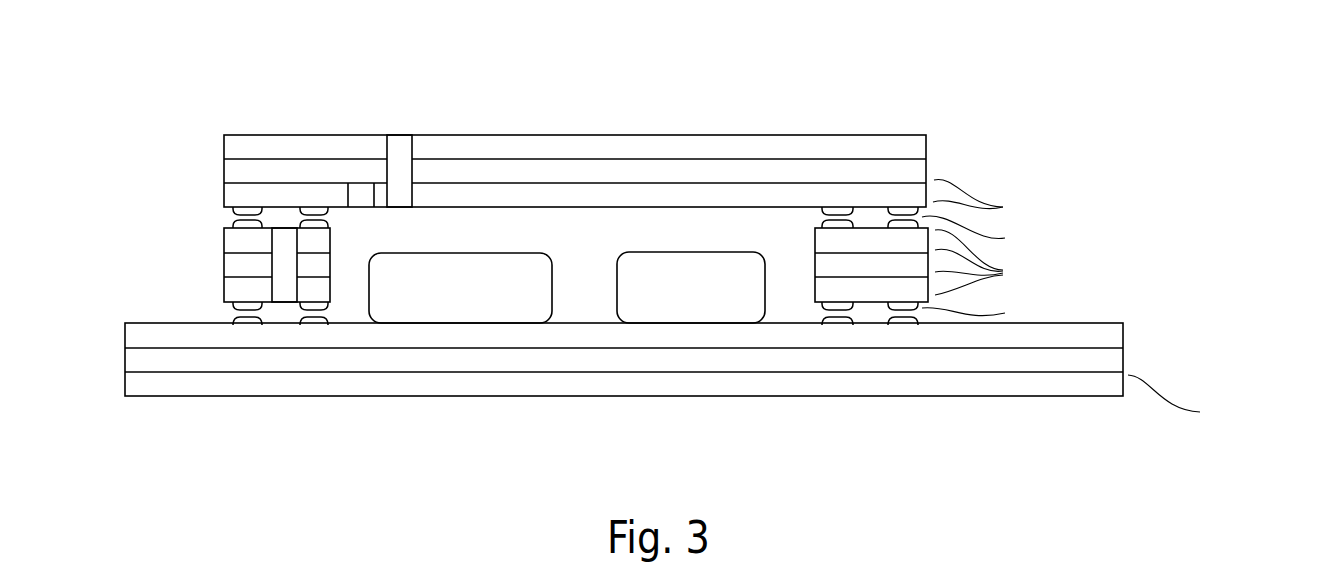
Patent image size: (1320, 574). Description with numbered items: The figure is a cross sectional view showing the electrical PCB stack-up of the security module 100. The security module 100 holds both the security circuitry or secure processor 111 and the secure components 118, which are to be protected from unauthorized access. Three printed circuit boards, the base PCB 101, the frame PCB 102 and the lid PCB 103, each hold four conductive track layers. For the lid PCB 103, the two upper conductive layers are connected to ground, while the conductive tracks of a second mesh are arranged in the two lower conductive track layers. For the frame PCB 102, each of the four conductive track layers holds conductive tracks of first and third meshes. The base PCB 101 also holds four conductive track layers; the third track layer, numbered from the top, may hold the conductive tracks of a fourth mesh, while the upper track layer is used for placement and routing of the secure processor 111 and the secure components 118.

The security module 100 is at (708, 408).
The base PCB 101 is at (1035, 398).
The frame PCB 102 is at (863, 252).
The lid PCB 103 is at (541, 125).
The secure processor 111 is at (766, 288).
The secure components 118 is at (553, 300).